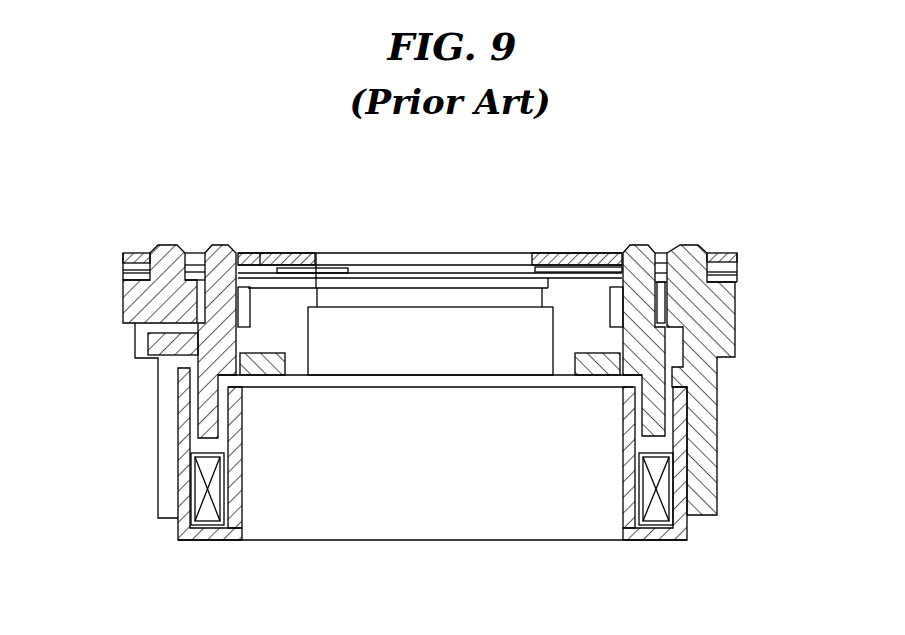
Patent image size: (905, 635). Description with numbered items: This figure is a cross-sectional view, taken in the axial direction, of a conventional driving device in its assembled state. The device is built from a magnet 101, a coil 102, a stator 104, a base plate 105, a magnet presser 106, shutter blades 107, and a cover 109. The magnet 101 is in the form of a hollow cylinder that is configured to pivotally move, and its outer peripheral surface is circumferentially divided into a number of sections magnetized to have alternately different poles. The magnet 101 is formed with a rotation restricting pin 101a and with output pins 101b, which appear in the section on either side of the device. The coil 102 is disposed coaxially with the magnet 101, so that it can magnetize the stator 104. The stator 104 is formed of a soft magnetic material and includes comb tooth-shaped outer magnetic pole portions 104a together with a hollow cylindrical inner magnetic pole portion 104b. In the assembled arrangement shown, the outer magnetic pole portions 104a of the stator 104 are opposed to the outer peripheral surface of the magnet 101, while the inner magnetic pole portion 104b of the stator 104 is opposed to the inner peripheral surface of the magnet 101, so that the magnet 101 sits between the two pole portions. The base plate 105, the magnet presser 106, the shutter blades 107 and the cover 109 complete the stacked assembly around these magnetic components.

The magnet 101 is at (716, 226).
The rotation restricting pin 101a is at (152, 344).
The output pins 101b is at (226, 262).
The coil 102 is at (206, 512).
The stator 104 is at (158, 549).
The outer magnetic pole portions 104a is at (690, 482).
The inner magnetic pole portion 104b is at (626, 478).
The base plate 105 is at (716, 303).
The magnet presser 106 is at (269, 364).
The shutter blades 107 is at (381, 270).
The cover 109 is at (566, 252).